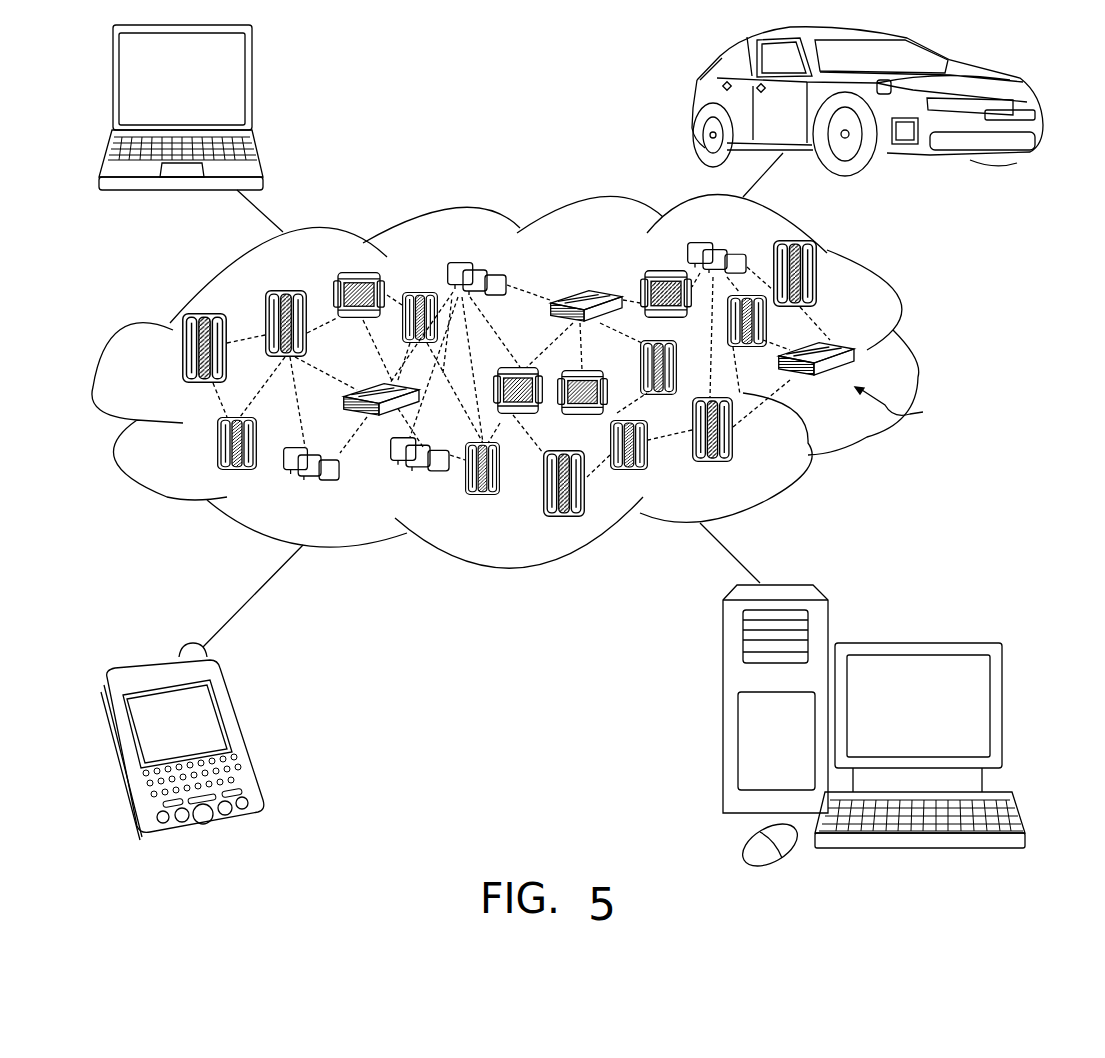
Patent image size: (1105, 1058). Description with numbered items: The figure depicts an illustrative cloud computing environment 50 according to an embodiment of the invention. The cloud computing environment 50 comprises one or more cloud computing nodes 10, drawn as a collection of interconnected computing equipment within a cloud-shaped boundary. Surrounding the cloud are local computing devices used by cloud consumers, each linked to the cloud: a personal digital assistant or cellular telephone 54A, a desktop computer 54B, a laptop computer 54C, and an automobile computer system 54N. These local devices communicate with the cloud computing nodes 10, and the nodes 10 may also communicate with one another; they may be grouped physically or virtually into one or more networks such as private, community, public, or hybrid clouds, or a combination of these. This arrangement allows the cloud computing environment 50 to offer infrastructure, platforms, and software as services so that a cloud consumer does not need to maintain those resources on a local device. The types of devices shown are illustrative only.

The cloud computing environment 50 is at (915, 358).
The cloud computing node 10 is at (904, 409).
The personal digital assistant or cellular telephone 54A is at (240, 737).
The desktop computer 54B is at (915, 642).
The laptop computer 54C is at (253, 88).
The automobile computer system 54N is at (697, 103).